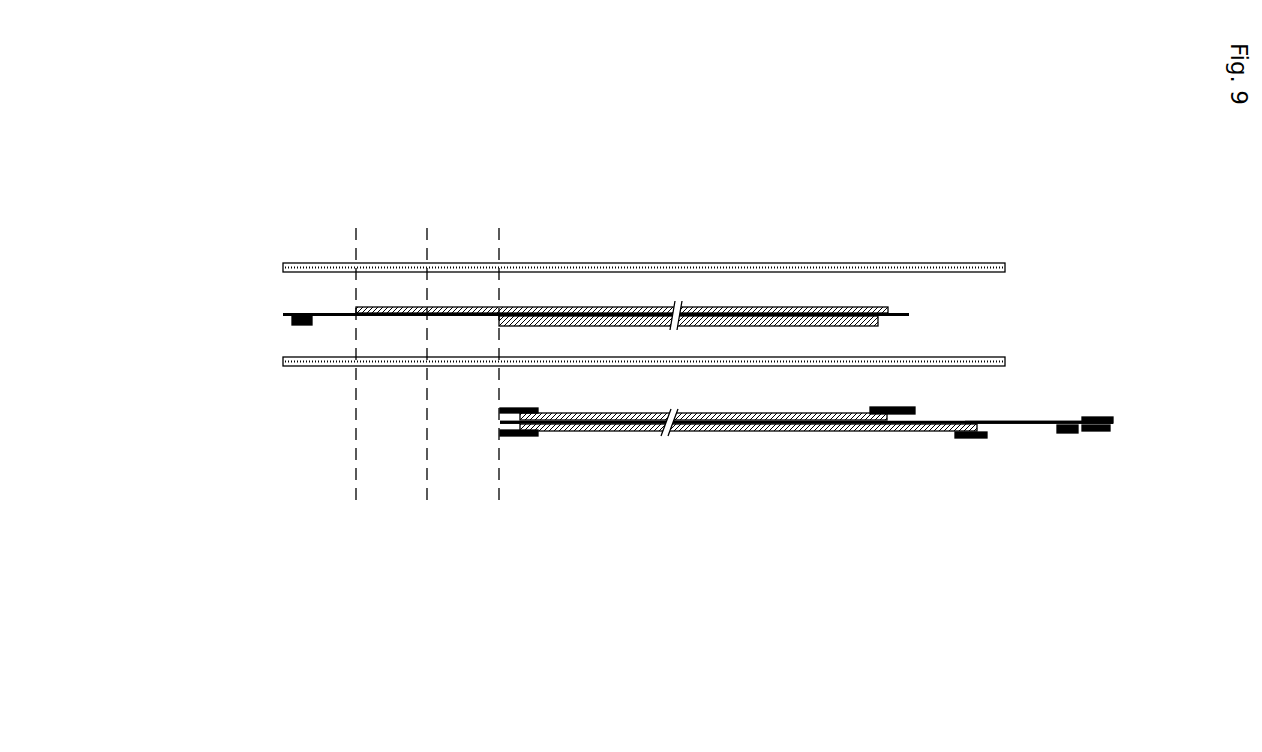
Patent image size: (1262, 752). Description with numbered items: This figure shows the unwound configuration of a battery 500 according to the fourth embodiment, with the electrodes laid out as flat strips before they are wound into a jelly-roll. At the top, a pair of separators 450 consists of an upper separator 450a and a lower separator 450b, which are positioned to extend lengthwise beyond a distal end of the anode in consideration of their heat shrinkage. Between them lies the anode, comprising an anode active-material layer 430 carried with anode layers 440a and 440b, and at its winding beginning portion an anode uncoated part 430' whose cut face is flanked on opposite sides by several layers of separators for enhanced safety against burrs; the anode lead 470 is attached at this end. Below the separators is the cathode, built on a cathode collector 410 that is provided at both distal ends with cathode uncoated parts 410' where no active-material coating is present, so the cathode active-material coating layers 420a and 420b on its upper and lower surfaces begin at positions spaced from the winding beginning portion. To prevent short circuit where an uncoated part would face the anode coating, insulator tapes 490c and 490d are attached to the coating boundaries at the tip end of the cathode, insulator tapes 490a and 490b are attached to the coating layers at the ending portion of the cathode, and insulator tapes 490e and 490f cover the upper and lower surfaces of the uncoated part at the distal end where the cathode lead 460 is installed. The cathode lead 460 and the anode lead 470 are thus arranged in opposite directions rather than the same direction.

The display device 500 is at (890, 158).
The protective substrate pair 450 is at (1116, 257).
The separator 450a is at (1006, 269).
The separator 450b is at (1006, 365).
The upper electrode layer 430 is at (622, 266).
The anode uncoated part 430' is at (602, 314).
The first adhesive layer portion 440a is at (763, 307).
The second adhesive layer portion 440b is at (620, 316).
The anode lead 470 is at (282, 322).
The cathode collector 410 is at (806, 469).
The cathode uncoated part 410' is at (780, 428).
The upper electrochromic layer 420a is at (617, 432).
The lower electrochromic layer 420b is at (762, 432).
The insulator tape 490a is at (872, 405).
The insulator tape 490b is at (961, 440).
The insulator tape 490c is at (521, 409).
The insulator tape 490d is at (535, 437).
The insulator tape 490e is at (1110, 418).
The insulator tape 490f is at (1097, 432).
The cathode lead 460 is at (1067, 434).